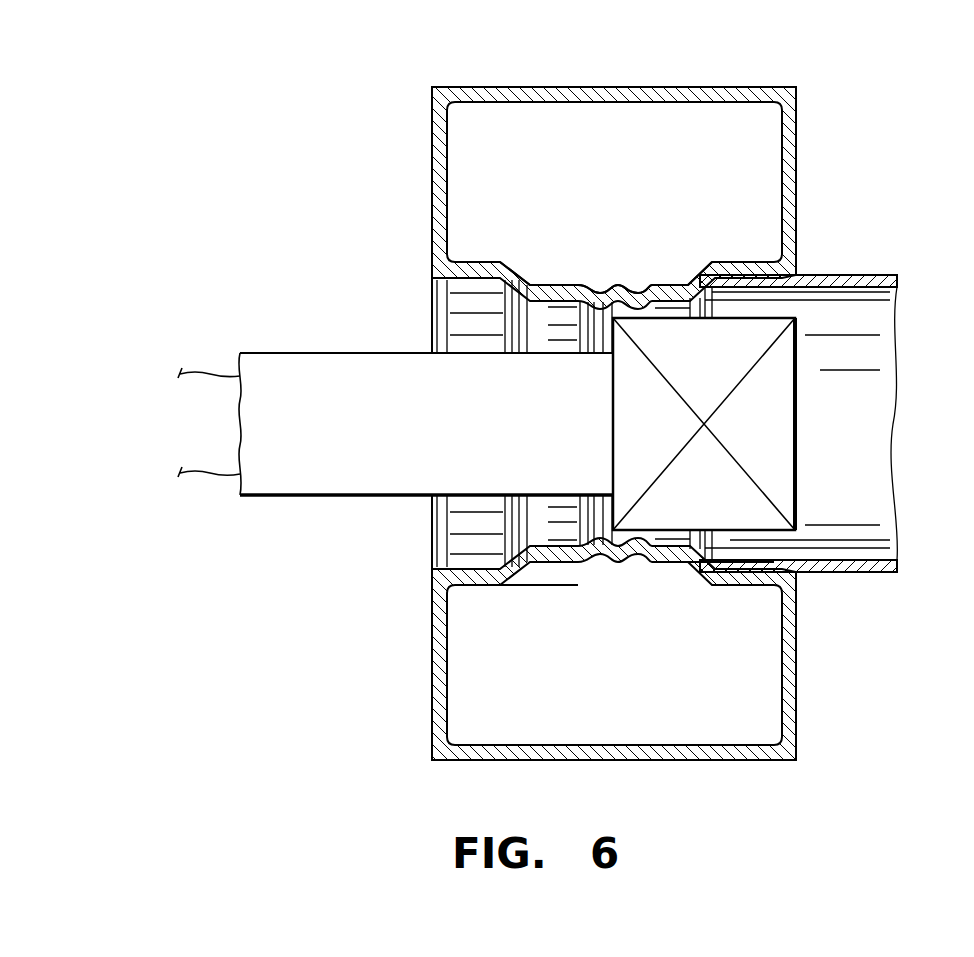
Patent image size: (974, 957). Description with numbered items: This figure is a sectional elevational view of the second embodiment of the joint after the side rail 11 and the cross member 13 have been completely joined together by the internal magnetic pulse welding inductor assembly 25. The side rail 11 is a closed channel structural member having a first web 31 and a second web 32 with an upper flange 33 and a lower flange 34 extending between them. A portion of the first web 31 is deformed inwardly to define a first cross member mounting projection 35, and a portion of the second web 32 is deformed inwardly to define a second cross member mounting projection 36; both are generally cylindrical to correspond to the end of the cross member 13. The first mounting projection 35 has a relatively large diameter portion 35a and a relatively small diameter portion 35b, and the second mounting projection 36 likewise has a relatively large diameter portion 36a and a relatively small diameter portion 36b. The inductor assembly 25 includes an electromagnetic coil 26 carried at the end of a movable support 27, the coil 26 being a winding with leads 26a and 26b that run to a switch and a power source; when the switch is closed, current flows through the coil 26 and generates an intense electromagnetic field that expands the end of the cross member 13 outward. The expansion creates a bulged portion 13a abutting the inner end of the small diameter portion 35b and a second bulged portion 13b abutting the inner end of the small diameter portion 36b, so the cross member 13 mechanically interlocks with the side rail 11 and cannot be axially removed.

The side rail 11 is at (432, 87).
The cross member 13 is at (872, 283).
The bulged portion 13a is at (595, 284).
The second bulged portion 13b is at (630, 284).
The internal magnetic pulse welding inductor assembly 25 is at (400, 331).
The electromagnetic coil 26 is at (785, 406).
The lead 26a is at (196, 371).
The lead 26b is at (200, 475).
The movable support 27 is at (290, 483).
The first web 31 is at (428, 175).
The second web 32 is at (792, 172).
The upper flange 33 is at (628, 88).
The lower flange 34 is at (668, 752).
The first cross member mounting projection 35 is at (528, 606).
The first relatively large diameter portion 35a is at (483, 262).
The second relatively small diameter portion 35b is at (548, 280).
The second cross member mounting projection 36 is at (700, 604).
The first relatively large diameter portion 36a is at (742, 262).
The second relatively small diameter portion 36b is at (667, 274).